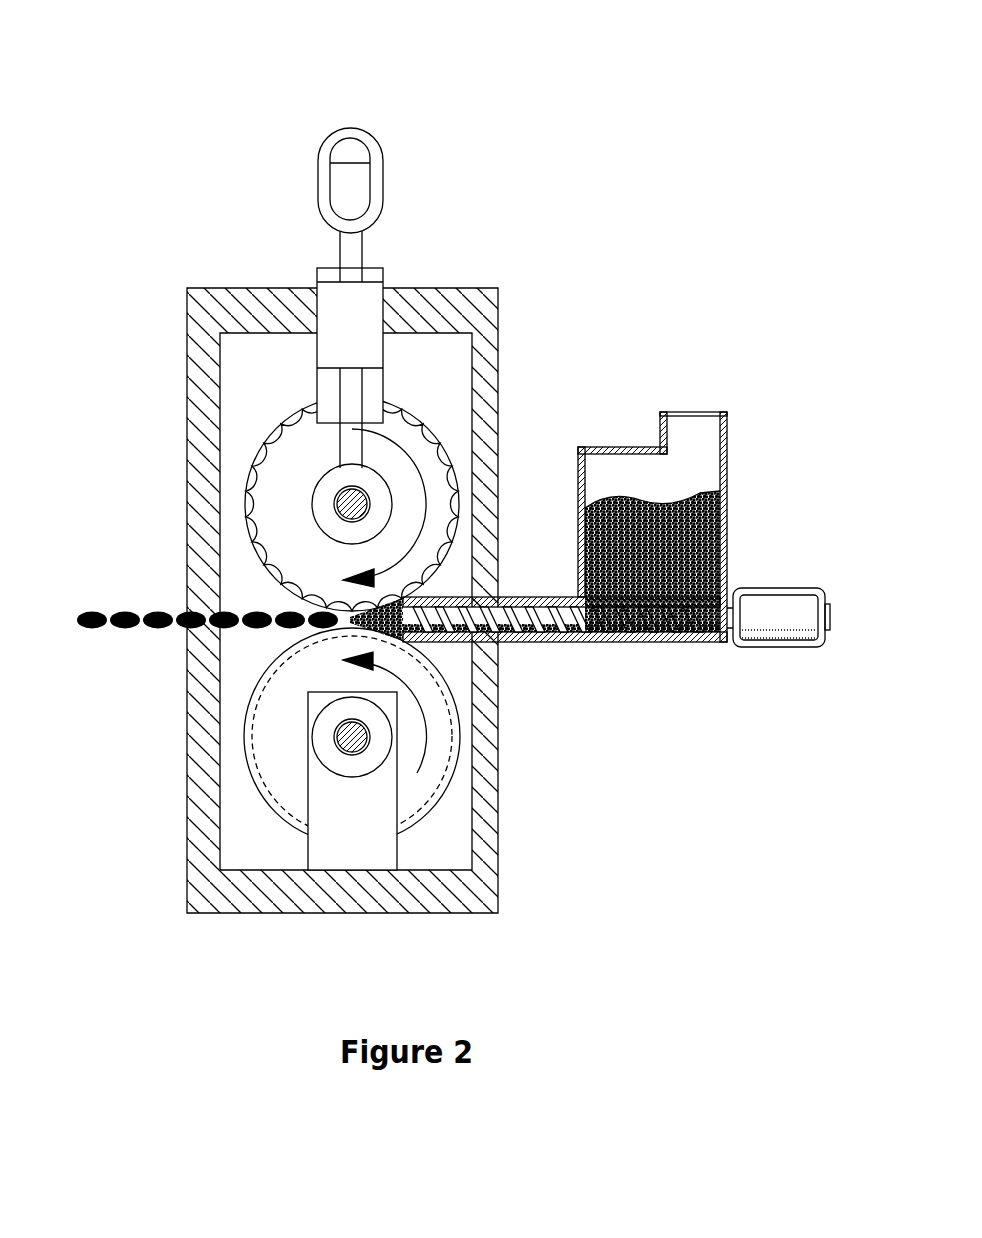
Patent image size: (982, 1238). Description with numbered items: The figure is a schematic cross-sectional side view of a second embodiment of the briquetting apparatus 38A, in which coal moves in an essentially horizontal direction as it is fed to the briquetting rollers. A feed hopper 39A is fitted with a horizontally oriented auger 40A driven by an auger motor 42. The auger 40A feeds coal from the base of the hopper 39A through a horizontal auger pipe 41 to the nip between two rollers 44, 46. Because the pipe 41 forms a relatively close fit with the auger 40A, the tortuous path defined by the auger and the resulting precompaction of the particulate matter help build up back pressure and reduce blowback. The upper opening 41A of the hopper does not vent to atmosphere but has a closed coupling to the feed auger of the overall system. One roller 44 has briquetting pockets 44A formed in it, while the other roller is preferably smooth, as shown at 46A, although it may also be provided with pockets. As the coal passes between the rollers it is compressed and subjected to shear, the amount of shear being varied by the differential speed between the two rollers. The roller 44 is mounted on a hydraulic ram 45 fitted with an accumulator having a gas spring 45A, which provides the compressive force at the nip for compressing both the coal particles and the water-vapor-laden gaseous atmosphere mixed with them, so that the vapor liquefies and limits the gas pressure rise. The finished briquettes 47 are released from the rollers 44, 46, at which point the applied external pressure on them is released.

The briquetting apparatus 38A is at (268, 197).
The gas spring 45A is at (352, 145).
The hydraulic ram 45 is at (357, 311).
The roller 44 is at (273, 493).
The briquetting pockets 44A is at (267, 442).
The briquettes 47 is at (123, 628).
The roller 46 is at (354, 749).
The smooth roller surface 46A is at (260, 780).
The horizontal auger pipe 41 is at (698, 475).
The upper opening 41A is at (692, 408).
The feed hopper 39A is at (728, 508).
The auger 40A is at (613, 641).
The auger motor 42 is at (800, 590).